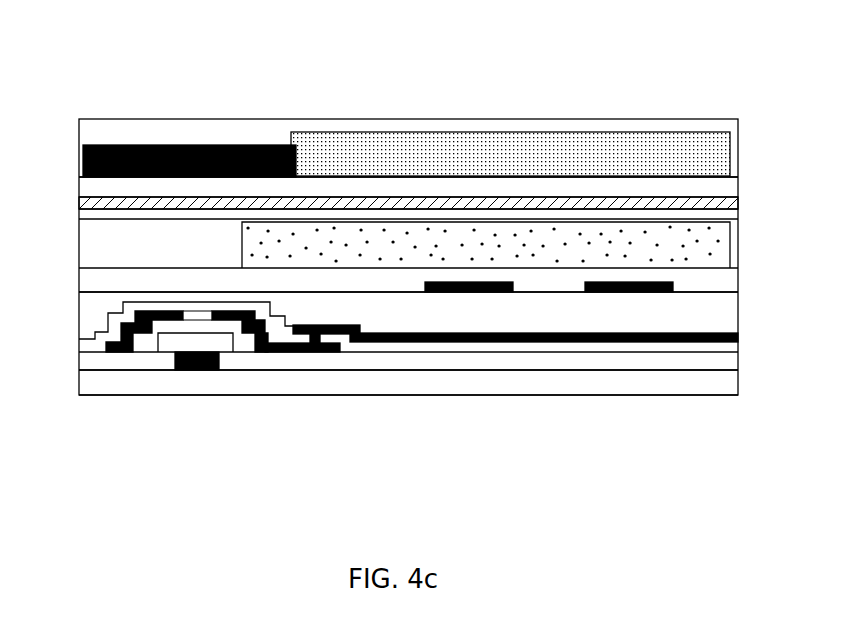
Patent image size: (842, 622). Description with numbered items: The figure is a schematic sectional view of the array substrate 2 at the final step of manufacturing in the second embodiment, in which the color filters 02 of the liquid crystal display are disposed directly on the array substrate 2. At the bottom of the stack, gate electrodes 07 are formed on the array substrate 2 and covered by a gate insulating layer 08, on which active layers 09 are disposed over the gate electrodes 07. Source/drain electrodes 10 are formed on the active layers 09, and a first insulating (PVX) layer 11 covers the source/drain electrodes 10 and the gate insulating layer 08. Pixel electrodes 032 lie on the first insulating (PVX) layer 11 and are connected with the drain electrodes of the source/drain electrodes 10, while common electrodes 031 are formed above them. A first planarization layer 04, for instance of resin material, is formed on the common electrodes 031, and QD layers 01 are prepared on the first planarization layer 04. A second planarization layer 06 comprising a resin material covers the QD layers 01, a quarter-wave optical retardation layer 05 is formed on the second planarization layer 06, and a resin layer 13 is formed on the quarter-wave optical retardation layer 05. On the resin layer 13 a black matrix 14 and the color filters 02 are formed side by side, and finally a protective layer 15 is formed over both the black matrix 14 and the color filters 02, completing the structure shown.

The array substrate 2 is at (148, 380).
The QD layers 01 is at (338, 252).
The color filters 02 is at (595, 180).
The first planarization layer 04 is at (250, 280).
The quarter-wave optical retardation layer 05 is at (401, 208).
The second planarization layer 06 is at (463, 214).
The gate electrodes 07 is at (192, 371).
The gate insulating layer 08 is at (312, 358).
The active layers 09 is at (238, 334).
The source/drain electrodes 10 is at (152, 305).
The first insulating (PVX) layer 11 is at (318, 353).
The resin layer 13 is at (530, 190).
The black matrix 14 is at (145, 145).
The protective layer 15 is at (650, 132).
The common electrodes 031 is at (628, 293).
The pixel electrodes 032 is at (497, 293).